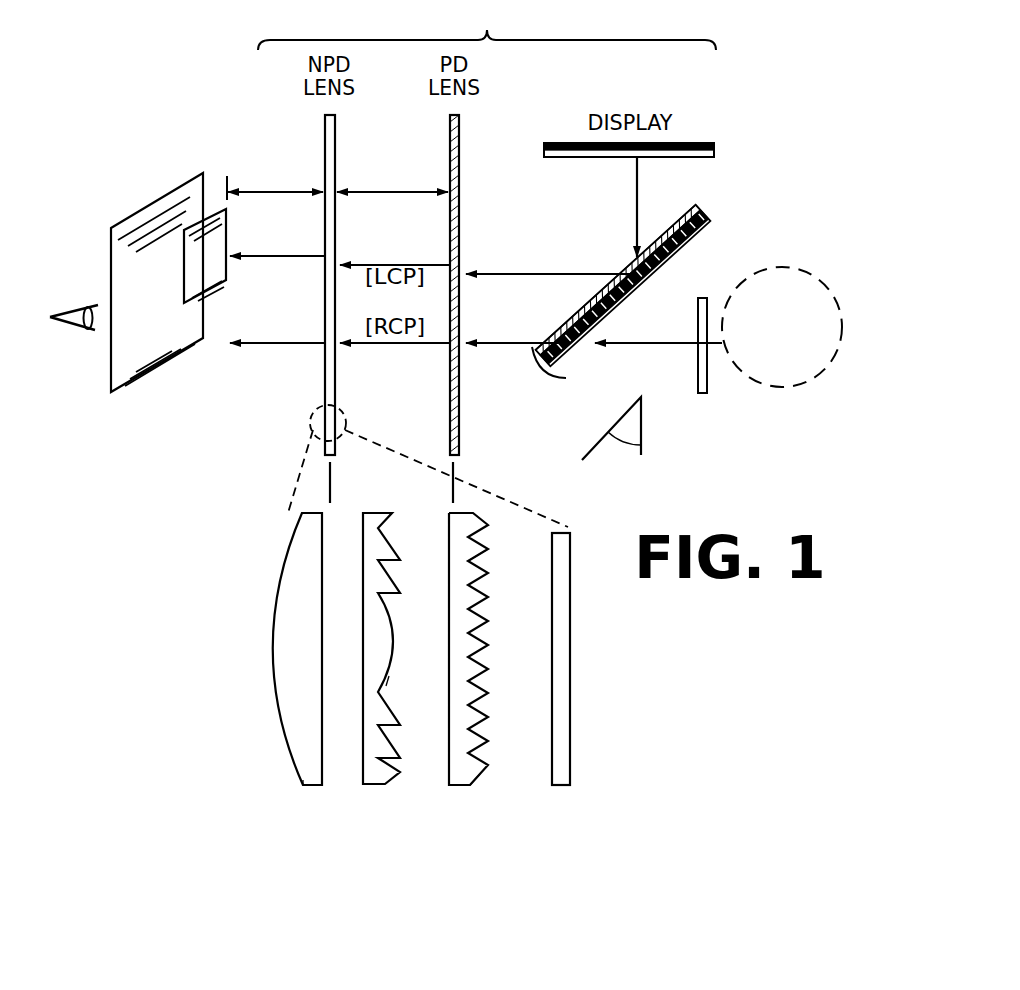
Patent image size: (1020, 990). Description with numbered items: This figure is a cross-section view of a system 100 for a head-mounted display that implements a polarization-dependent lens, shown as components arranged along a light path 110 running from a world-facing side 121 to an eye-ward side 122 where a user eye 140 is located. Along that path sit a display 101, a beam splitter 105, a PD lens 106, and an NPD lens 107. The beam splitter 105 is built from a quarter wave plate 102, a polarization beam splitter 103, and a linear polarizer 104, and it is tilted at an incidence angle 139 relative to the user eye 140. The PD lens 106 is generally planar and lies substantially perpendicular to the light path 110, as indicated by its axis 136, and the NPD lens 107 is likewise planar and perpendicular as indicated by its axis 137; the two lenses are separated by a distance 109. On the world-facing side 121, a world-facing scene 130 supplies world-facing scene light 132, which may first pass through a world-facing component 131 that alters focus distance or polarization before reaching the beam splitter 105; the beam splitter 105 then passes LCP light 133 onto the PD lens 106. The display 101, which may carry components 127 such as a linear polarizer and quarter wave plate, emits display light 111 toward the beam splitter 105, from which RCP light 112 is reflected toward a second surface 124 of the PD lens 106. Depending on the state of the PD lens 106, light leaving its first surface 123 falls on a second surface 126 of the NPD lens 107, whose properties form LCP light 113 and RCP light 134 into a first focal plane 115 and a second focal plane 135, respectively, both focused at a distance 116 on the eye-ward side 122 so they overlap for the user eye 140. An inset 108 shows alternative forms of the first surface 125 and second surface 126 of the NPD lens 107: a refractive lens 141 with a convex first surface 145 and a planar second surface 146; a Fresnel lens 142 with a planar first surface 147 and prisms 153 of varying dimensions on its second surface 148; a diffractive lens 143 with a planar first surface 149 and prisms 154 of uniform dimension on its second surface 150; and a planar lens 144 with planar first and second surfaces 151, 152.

The system 100 is at (246, 141).
The light path 110 is at (487, 25).
The NPD lens 107 is at (325, 118).
The PD lens 106 is at (450, 118).
The first surface 125 is at (321, 182).
The second surface 126 is at (339, 182).
The first surface 123 is at (447, 182).
The second surface 124 is at (462, 182).
The display 101 is at (714, 146).
The components 127 is at (544, 152).
The display light 111 is at (636, 185).
The quarter wave plate 102 is at (701, 211).
The polarization beam splitter 103 is at (700, 215).
The linear polarizer 104 is at (710, 233).
The beam splitter 105 is at (560, 383).
The world-facing side 121 is at (791, 240).
The world-facing scene 130 is at (766, 356).
The world-facing component 131 is at (708, 391).
The world-facing scene light 132 is at (680, 343).
The incidence angle 139 is at (623, 446).
The distance 116 is at (290, 196).
The distance 109 is at (410, 196).
The RCP light 112 is at (515, 278).
The LCP light 113 is at (248, 262).
The LCP light 133 is at (468, 349).
The RCP light 134 is at (250, 349).
The second focal plane 135 is at (165, 361).
The first focal plane 115 is at (184, 258).
The eye-ward side 122 is at (88, 286).
The user eye 140 is at (70, 332).
The inset 108 is at (344, 412).
The axis 137 is at (333, 483).
The axis 136 is at (456, 464).
The refractive lens 141 is at (300, 634).
The convex first surface 145 is at (300, 779).
The planar second surface 146 is at (324, 779).
The Fresnel lens 142 is at (383, 634).
The prisms 153 is at (394, 529).
The planar first surface 147 is at (361, 681).
The second surface 148 is at (393, 681).
The diffractive lens 143 is at (468, 634).
The prisms 154 is at (476, 552).
The planar first surface 149 is at (447, 779).
The second surface 150 is at (484, 777).
The planar lens 144 is at (551, 578).
The planar first surface 151 is at (550, 681).
The planar second surface 152 is at (572, 681).